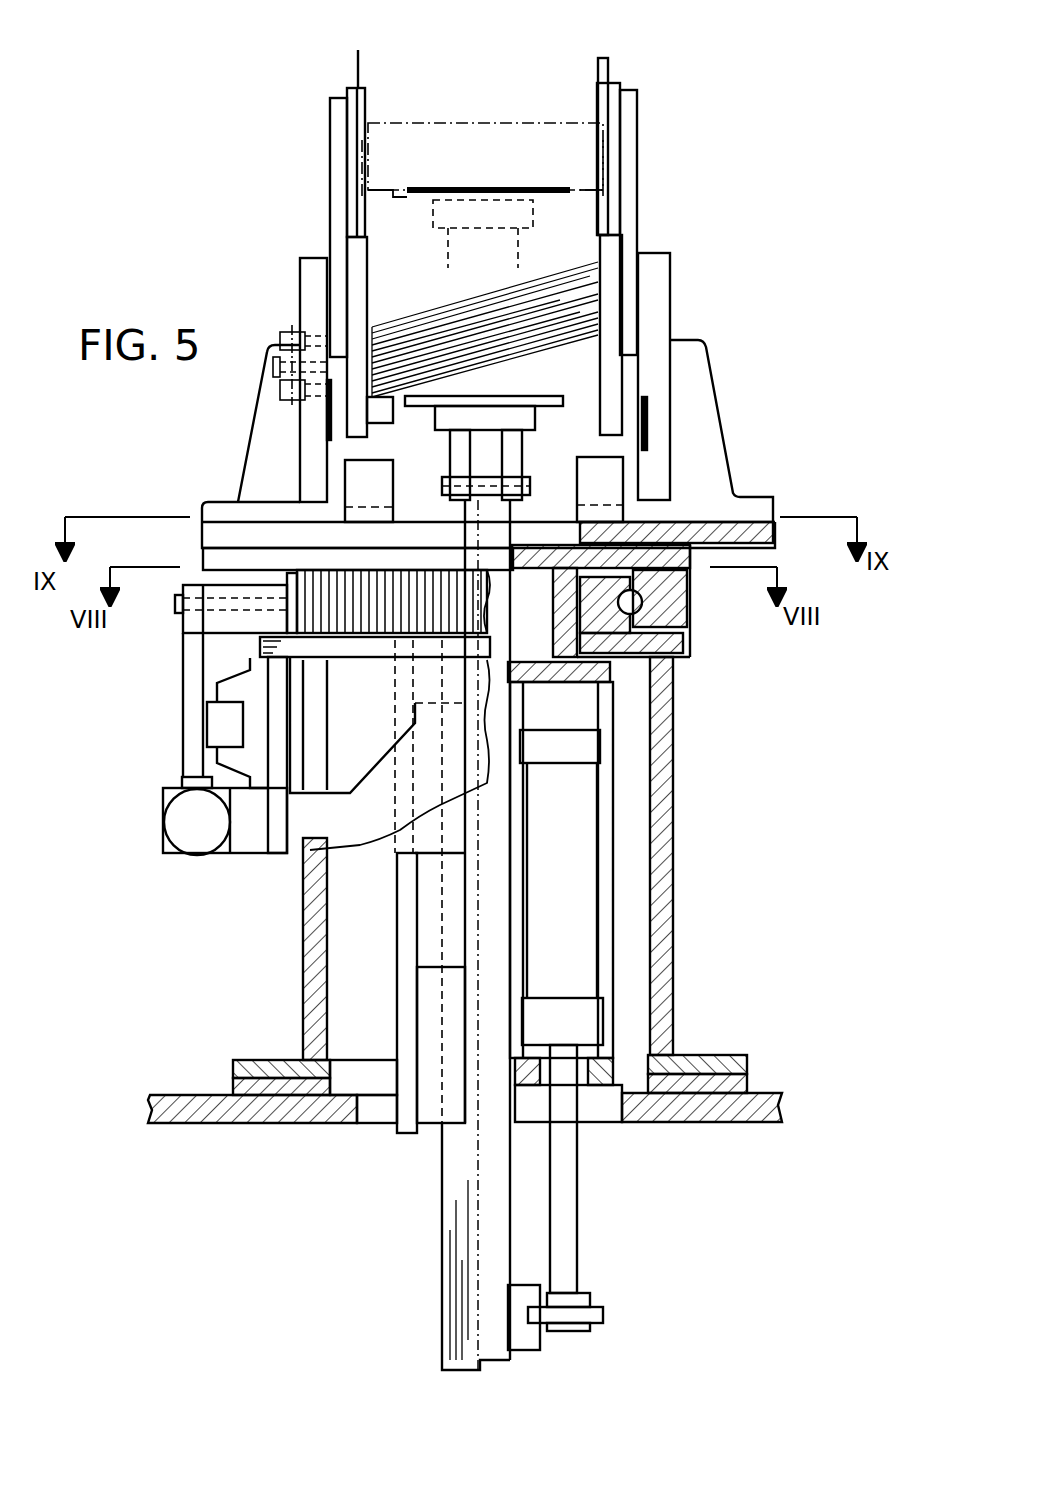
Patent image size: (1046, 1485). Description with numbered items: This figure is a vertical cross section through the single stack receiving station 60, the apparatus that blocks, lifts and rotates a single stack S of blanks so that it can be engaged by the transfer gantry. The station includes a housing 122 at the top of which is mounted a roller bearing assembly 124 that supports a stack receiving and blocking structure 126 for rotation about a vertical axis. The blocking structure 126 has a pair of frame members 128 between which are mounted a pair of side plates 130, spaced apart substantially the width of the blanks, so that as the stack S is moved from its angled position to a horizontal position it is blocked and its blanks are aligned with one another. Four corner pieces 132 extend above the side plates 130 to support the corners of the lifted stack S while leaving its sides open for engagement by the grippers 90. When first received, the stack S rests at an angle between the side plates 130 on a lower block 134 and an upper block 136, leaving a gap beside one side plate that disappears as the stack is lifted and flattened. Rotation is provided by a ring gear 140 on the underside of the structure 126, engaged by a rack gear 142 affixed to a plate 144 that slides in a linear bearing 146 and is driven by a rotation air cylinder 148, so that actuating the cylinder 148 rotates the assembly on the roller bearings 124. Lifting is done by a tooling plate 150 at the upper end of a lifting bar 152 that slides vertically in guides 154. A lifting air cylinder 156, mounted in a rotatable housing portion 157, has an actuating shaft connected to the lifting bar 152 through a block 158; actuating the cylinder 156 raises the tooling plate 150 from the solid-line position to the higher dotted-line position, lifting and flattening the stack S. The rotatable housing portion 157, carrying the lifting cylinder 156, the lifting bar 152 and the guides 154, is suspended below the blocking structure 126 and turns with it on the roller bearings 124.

The single stack receiving station 60 is at (258, 183).
The stack S is at (505, 115).
The grippers 90 is at (357, 200).
The housing 122 is at (673, 850).
The roller bearing assembly 124 is at (640, 606).
The stack receiving and blocking structure 126 is at (733, 420).
The frame members 128 is at (300, 292).
The side plates 130 is at (360, 258).
The corner pieces 132 is at (334, 136).
The lower block 134 is at (386, 425).
The upper block 136 is at (583, 400).
The ring gear 140 is at (320, 595).
The rack gear 142 is at (288, 583).
The plate 144 is at (183, 668).
The linear bearing 146 is at (215, 713).
The rotation air cylinder 148 is at (215, 840).
The tooling plate 150 is at (498, 398).
The lifting bar 152 is at (450, 1203).
The guides 154 is at (447, 830).
The lifting air cylinder 156 is at (580, 940).
The rotatable housing portion 157 is at (610, 670).
The block 158 is at (535, 1345).